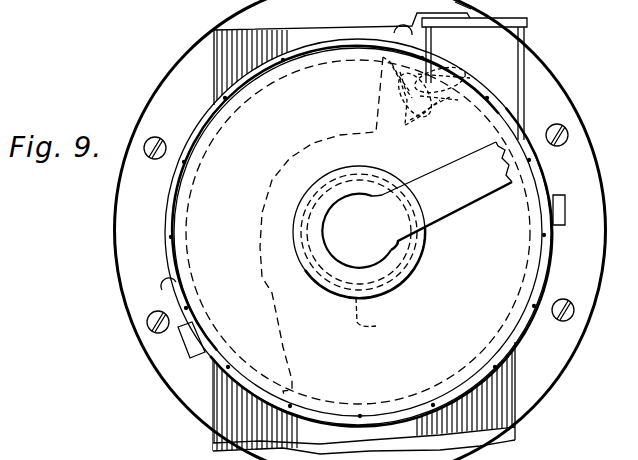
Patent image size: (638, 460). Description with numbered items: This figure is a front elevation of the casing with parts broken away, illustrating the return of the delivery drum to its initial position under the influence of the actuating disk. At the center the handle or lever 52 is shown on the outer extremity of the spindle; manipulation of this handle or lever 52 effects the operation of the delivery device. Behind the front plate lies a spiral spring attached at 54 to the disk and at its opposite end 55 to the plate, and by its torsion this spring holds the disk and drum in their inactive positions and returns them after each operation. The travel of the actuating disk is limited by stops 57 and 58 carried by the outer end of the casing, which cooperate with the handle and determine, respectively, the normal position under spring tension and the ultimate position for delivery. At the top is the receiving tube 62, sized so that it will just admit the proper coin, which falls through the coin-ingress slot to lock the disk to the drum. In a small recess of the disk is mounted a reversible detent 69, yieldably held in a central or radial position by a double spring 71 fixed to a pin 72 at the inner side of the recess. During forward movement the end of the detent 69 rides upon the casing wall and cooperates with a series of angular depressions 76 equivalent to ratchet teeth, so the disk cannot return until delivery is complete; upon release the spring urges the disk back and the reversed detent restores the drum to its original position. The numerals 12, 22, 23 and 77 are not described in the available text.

The frame ring 12 is at (418, 118).
The casing 22 is at (550, 269).
The cover flange 23 is at (160, 91).
The handle or lever 52 is at (476, 198).
The attachment point of spring to disk 54 is at (355, 180).
The opposite end of spring 55 is at (378, 317).
The stop 57 is at (178, 346).
The stop 58 is at (563, 203).
The receiving tube 62 is at (526, 50).
The reversible detent 69 is at (462, 77).
The double spring 71 is at (380, 124).
The pin 72 is at (431, 117).
The angular depressions 76 is at (229, 371).
The spring 77 is at (442, 73).